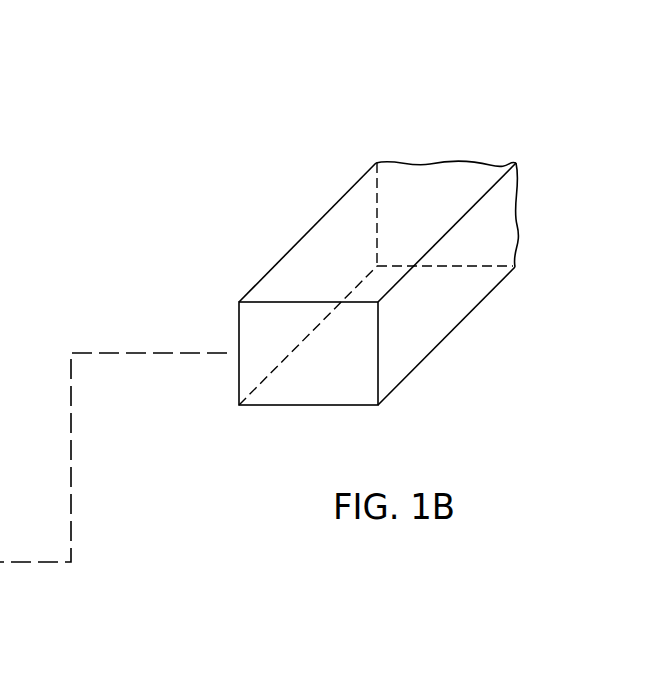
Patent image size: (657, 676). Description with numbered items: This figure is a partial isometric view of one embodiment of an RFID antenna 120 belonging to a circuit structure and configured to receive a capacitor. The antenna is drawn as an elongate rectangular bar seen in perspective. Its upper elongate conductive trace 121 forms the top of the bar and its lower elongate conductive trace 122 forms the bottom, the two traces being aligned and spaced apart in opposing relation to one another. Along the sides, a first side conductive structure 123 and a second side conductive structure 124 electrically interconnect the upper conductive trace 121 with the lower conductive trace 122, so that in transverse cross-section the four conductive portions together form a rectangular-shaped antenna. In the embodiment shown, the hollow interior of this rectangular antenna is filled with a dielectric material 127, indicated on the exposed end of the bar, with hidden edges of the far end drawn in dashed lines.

The RFID antenna 120 is at (331, 200).
The upper elongate conductive trace 121 is at (444, 215).
The lower elongate conductive trace 122 is at (330, 388).
The first side conductive structure 123 is at (455, 300).
The second side conductive structure 124 is at (303, 275).
The dielectric material 127 is at (358, 352).